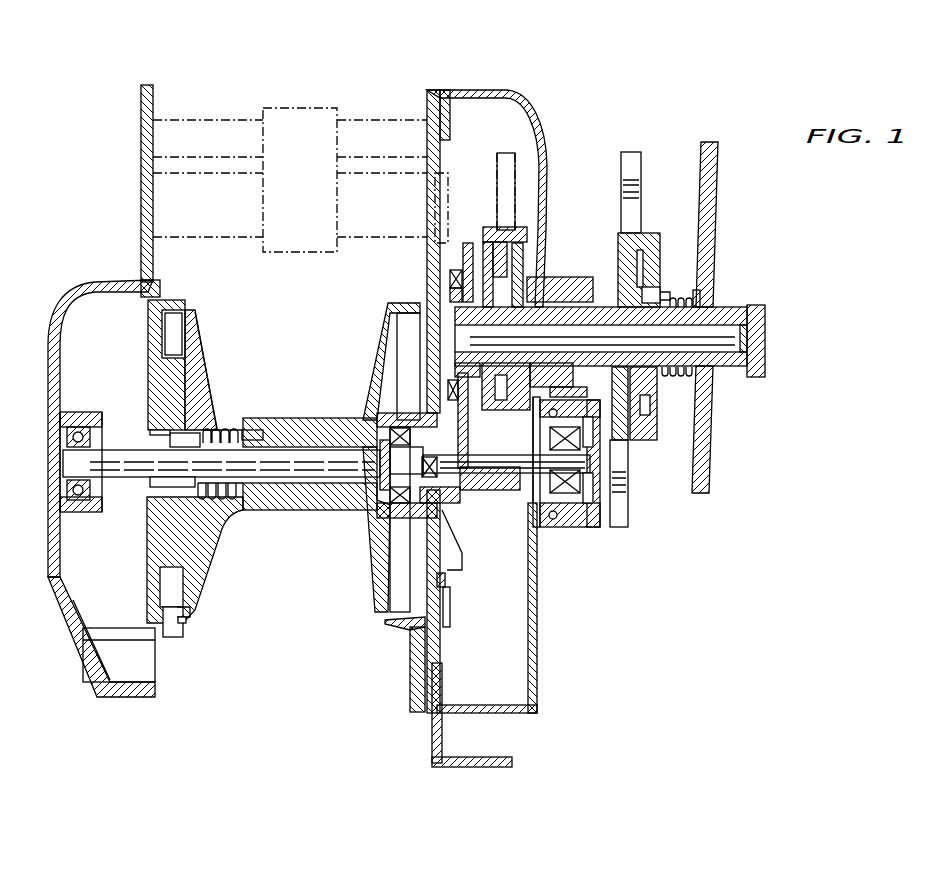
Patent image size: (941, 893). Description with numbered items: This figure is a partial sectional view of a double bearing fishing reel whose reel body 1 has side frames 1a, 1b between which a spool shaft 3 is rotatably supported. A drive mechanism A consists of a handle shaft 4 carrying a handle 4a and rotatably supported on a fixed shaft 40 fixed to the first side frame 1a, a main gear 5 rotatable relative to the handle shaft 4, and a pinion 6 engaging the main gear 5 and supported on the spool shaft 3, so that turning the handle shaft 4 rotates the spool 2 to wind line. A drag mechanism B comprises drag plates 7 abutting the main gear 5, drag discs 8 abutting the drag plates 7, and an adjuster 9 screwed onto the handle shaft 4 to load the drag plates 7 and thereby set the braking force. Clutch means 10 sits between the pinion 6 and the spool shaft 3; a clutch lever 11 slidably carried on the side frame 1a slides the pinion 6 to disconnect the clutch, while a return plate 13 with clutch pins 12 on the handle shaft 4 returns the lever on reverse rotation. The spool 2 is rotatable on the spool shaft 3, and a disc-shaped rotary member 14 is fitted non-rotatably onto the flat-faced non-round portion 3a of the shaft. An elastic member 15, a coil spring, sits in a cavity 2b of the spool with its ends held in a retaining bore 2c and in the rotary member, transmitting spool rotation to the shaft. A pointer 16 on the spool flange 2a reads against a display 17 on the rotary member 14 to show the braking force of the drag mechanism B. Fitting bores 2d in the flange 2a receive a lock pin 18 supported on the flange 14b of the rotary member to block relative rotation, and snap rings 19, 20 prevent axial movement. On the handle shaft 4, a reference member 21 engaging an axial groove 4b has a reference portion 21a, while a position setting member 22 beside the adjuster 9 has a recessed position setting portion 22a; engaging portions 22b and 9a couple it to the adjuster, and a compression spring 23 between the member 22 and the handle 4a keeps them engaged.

The reel body 1 is at (508, 90).
The side frame 1a is at (446, 90).
The side frame 1b is at (147, 85).
The spool 2 is at (337, 422).
The flange 2a is at (206, 342).
The cavity 2b is at (218, 430).
The retaining bore 2c is at (258, 433).
The fitting bores 2d is at (190, 614).
The spool shaft 3 is at (305, 450).
The non-round portion 3a is at (155, 445).
The handle shaft 4 is at (765, 322).
The handle 4a is at (720, 200).
The groove 4b is at (553, 313).
The fixed shaft 40 is at (748, 338).
The main gear 5 is at (492, 190).
The pinion 6 is at (502, 483).
The drag plates 7 is at (525, 232).
The drag discs 8 is at (525, 262).
The adjuster 9 is at (630, 152).
The engaging portion 9a is at (645, 412).
The clutch means 10 is at (420, 477).
The clutch lever 11 is at (432, 730).
The clutch pins 12 is at (450, 277).
The return plate 13 is at (463, 255).
The rotary member 14 is at (147, 350).
The flange 14b is at (160, 436).
The elastic member 15 is at (227, 433).
The pointer 16 is at (188, 310).
The display 17 is at (178, 300).
The lock pin 18 is at (173, 640).
The snap ring 19 is at (143, 490).
The snap ring 20 is at (368, 493).
The reference member 21 is at (650, 290).
The reference portion 21a is at (698, 298).
The position setting member 22 is at (650, 240).
The position setting portion 22a is at (668, 293).
The engaging portion 22b is at (628, 433).
The compression spring 23 is at (675, 372).
The drive mechanism A is at (453, 433).
The drag mechanism B is at (545, 280).